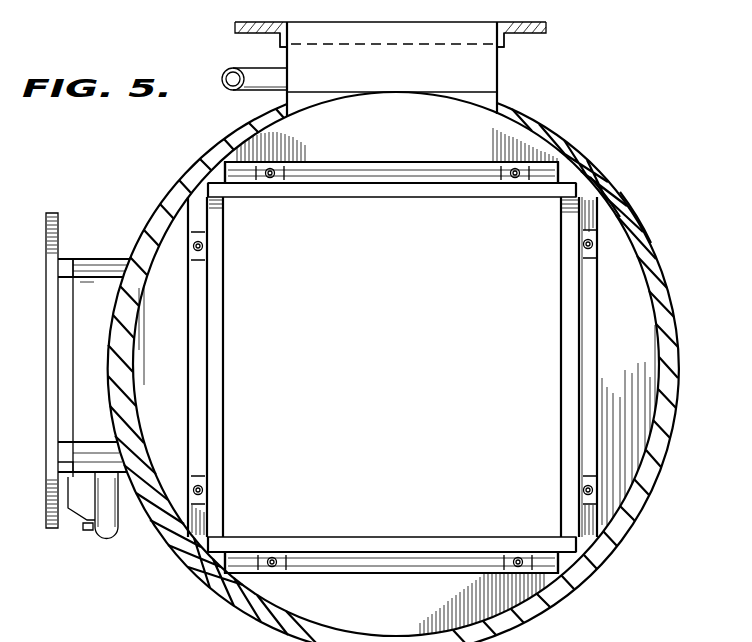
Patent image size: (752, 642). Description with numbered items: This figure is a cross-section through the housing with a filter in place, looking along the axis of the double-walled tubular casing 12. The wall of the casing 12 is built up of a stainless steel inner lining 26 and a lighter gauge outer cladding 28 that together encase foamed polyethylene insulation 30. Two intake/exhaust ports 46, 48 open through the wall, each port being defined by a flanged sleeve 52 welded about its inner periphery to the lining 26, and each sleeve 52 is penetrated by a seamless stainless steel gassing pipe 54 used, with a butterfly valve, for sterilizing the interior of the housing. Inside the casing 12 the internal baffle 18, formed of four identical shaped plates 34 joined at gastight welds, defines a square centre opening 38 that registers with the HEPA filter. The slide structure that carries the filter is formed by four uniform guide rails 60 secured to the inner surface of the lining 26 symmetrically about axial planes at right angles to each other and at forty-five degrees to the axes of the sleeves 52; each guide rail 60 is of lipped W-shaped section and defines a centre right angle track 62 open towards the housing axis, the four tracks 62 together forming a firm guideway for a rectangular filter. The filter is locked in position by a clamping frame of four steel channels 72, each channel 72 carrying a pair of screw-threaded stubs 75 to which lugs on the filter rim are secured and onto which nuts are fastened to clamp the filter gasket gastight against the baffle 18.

The tubular casing 12 is at (612, 157).
The internal baffle 18 is at (450, 146).
The inner lining 26 is at (586, 191).
The outer cladding 28 is at (629, 201).
The foamed polyethylene insulation 30 is at (636, 221).
The shaped plates 34 is at (267, 198).
The square centre opening 38 is at (338, 198).
The intake/exhaust port 46 is at (477, 75).
The intake/exhaust port 48 is at (78, 254).
The flanged sleeve 52 is at (498, 86).
The gassing pipe 54 is at (288, 81).
The guide rail 60 is at (220, 175).
The right angle track 62 is at (213, 548).
The steel channel 72 is at (197, 315).
The screw-threaded stub 75 is at (206, 248).